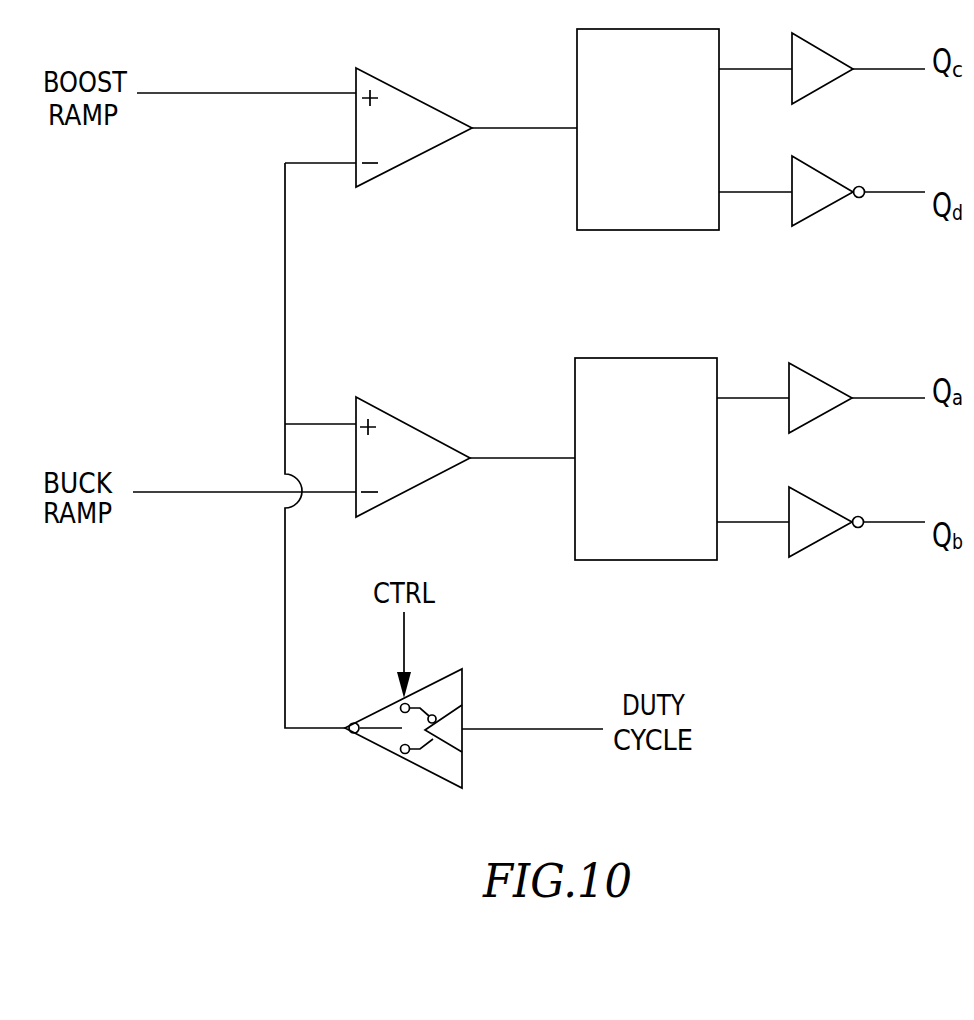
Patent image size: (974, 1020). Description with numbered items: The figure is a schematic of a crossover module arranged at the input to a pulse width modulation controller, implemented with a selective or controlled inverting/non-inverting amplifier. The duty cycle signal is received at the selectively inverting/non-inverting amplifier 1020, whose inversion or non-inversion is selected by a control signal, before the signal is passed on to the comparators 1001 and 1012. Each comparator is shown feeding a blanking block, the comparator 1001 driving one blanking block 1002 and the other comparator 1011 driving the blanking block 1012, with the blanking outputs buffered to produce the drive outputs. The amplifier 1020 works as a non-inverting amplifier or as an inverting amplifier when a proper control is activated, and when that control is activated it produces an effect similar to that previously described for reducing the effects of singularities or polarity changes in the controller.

The boost comparator 1011 is at (415, 158).
The comparator 1012 is at (647, 232).
The comparator 1001 is at (414, 489).
The buck blanking circuit 1002 is at (645, 562).
The selectively inverting/non-inverting amplifier 1020 is at (402, 757).